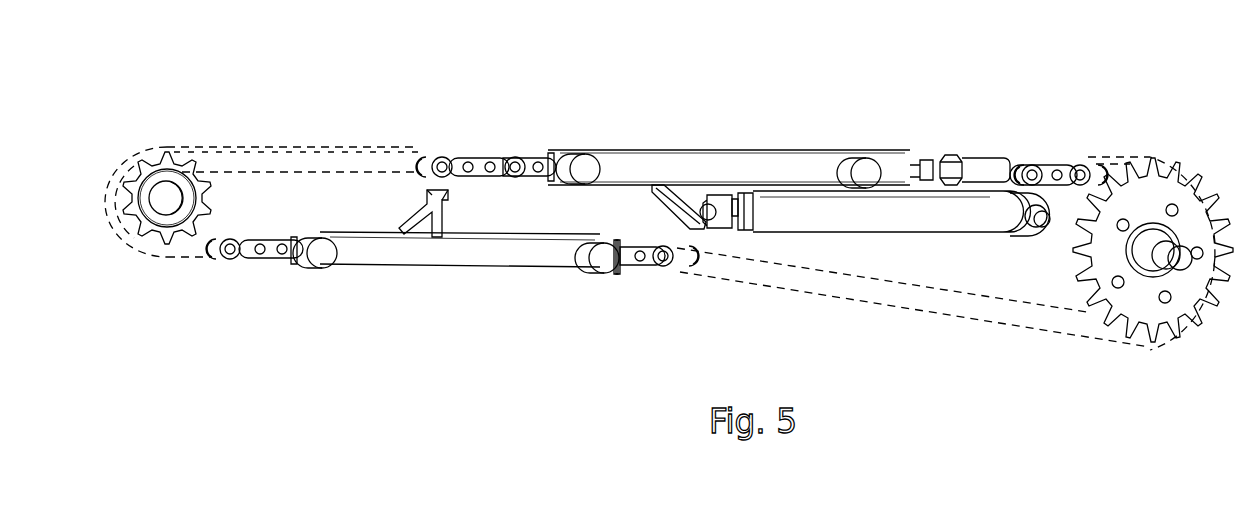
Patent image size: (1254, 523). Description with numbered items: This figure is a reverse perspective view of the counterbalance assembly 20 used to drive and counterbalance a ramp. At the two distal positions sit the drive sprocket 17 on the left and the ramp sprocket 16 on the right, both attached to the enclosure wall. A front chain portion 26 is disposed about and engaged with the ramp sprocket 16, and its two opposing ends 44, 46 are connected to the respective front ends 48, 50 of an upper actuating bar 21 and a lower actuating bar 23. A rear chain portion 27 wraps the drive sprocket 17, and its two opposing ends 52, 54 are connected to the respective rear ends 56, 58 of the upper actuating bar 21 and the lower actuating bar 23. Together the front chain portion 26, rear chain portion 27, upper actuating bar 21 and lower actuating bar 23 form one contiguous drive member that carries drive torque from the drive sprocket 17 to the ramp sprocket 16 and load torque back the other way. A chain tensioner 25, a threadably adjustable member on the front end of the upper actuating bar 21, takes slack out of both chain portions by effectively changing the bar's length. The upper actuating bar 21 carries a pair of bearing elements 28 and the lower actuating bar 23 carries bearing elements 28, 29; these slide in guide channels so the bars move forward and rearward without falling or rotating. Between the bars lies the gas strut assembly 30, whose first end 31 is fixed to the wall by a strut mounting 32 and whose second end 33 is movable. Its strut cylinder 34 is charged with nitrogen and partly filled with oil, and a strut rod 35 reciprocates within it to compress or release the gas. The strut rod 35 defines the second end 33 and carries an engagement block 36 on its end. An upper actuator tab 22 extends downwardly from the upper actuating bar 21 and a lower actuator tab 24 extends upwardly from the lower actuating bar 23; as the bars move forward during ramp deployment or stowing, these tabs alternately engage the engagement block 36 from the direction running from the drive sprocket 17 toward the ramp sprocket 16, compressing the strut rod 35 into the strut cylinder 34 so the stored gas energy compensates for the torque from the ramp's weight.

The ramp sprocket 16 is at (1188, 162).
The drive sprocket 17 is at (205, 210).
The counterbalance assembly 20 is at (779, 110).
The upper actuating bar 21 is at (730, 160).
The upper actuator tab 22 is at (690, 234).
The lower actuating bar 23 is at (470, 250).
The lower actuator tab 24 is at (420, 205).
The chain tensioner 25 is at (980, 158).
The front chain portion 26 is at (901, 245).
The rear chain portion 27 is at (345, 211).
The bearing element 28 is at (583, 162).
The bearing element 29 is at (320, 258).
The gas strut assembly 30 is at (882, 285).
The first end 31 is at (1020, 238).
The strut mounting 32 is at (1040, 236).
The second end 33 is at (712, 223).
The strut cylinder 34 is at (860, 233).
The strut rod 35 is at (748, 233).
The engagement block 36 is at (735, 233).
The end of front chain portion 44 is at (1027, 164).
The end of front chain portion 46 is at (635, 265).
The front end of upper actuating bar 48 is at (1010, 162).
The front end of lower actuating bar 50 is at (605, 240).
The end of rear chain portion 52 is at (535, 175).
The end of rear chain portion 54 is at (282, 262).
The rear end of upper actuating bar 56 is at (547, 150).
The rear end of lower actuating bar 58 is at (268, 262).